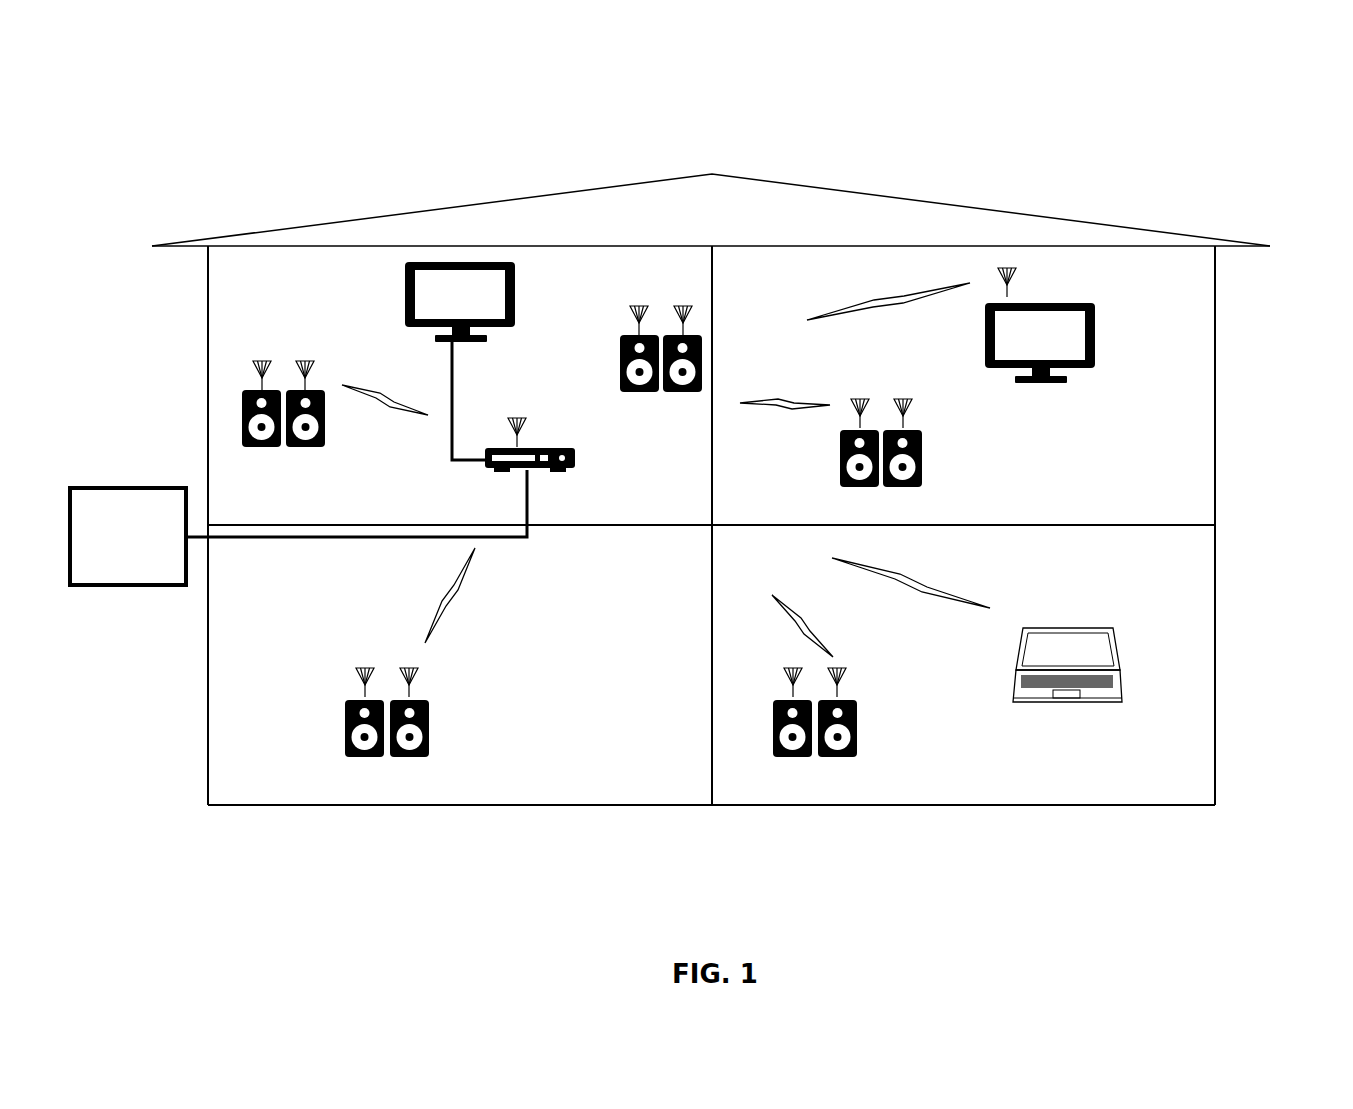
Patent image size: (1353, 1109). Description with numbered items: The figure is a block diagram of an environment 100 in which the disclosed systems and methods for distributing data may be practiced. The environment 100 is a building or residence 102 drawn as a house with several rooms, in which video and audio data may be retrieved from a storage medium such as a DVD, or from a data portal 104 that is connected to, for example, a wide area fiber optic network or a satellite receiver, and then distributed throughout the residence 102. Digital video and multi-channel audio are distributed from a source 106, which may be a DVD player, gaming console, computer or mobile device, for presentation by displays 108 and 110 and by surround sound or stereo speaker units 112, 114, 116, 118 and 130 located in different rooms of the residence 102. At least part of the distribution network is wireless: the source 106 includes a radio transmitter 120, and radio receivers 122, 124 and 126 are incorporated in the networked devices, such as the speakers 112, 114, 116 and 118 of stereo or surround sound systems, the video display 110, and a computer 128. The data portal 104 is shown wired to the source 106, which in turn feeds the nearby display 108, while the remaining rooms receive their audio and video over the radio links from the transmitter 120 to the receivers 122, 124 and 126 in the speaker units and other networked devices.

The environment 100 is at (1254, 124).
The residence 102 is at (1200, 851).
The data portal 104 is at (111, 578).
The source 106 is at (571, 440).
The display 108 is at (404, 295).
The video display 110 is at (1091, 368).
The speaker unit 112 is at (326, 447).
The speaker unit 114 is at (917, 457).
The speaker unit 116 is at (422, 728).
The speaker unit 118 is at (851, 728).
The radio transmitter 120 is at (526, 428).
The radio receiver 122 is at (414, 680).
The radio receiver 124 is at (842, 680).
The radio receiver 126 is at (908, 406).
The computer 128 is at (1122, 694).
The speaker unit 130 is at (619, 356).